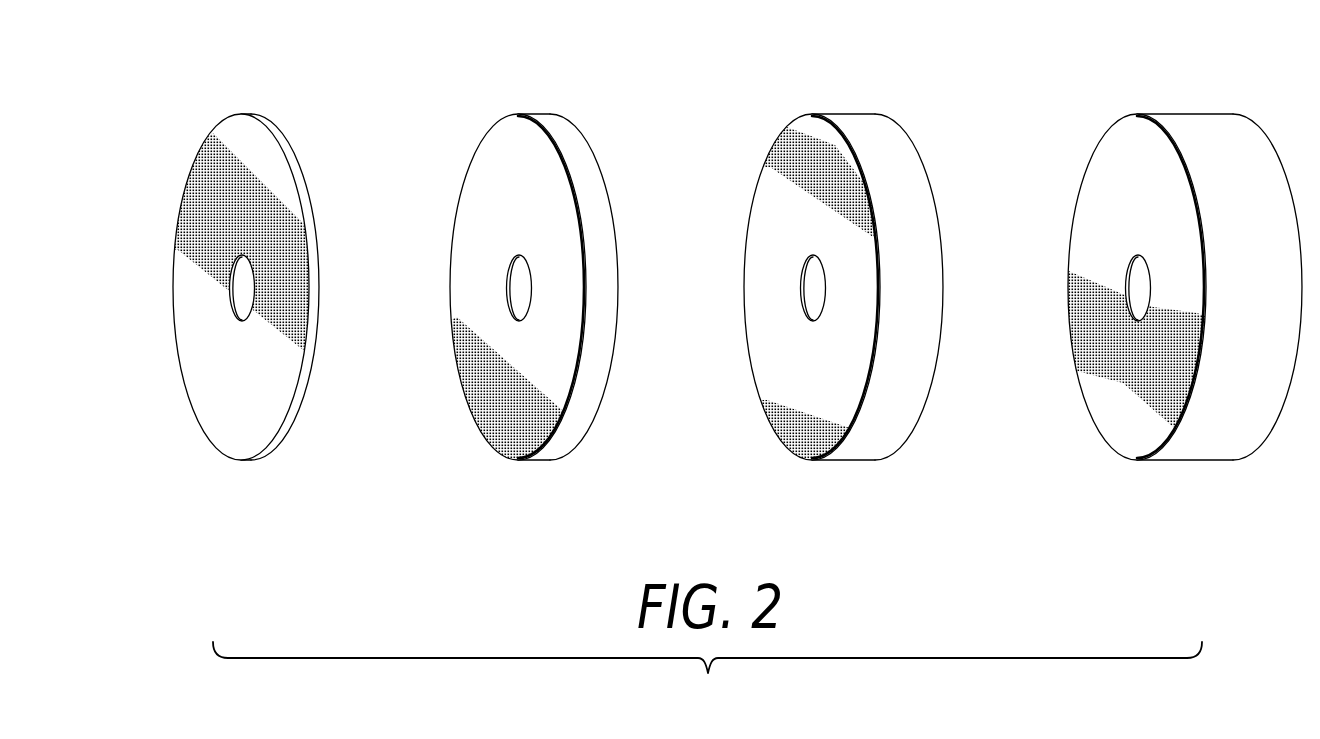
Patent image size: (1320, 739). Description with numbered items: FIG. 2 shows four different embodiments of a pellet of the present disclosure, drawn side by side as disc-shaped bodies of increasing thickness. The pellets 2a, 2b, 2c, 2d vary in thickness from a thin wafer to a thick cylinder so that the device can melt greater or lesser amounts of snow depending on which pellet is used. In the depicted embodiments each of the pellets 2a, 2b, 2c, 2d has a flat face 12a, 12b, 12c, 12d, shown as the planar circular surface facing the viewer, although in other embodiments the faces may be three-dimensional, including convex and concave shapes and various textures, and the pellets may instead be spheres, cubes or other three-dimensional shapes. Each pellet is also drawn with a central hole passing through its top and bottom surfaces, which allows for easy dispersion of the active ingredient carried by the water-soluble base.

The pellet 2a is at (216, 262).
The pellet 2b is at (499, 272).
The pellet 2c is at (808, 272).
The pellet 2d is at (1150, 262).
The flat face 12a is at (215, 412).
The flat face 12b is at (492, 412).
The flat face 12c is at (786, 412).
The flat face 12d is at (1111, 412).